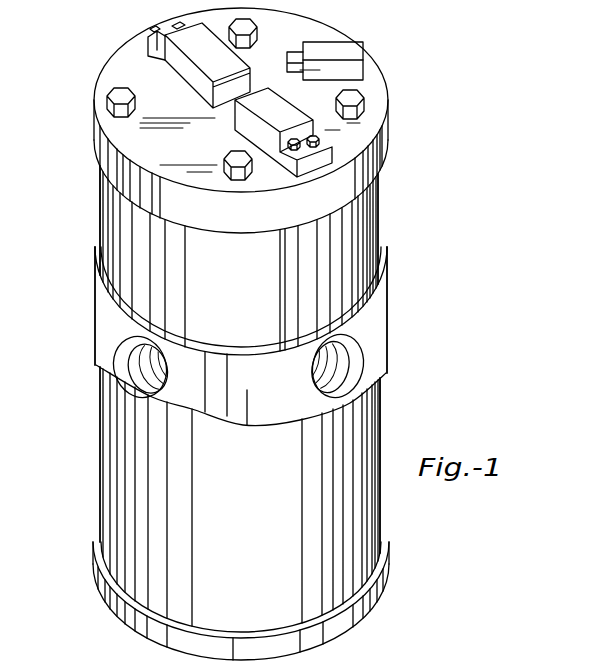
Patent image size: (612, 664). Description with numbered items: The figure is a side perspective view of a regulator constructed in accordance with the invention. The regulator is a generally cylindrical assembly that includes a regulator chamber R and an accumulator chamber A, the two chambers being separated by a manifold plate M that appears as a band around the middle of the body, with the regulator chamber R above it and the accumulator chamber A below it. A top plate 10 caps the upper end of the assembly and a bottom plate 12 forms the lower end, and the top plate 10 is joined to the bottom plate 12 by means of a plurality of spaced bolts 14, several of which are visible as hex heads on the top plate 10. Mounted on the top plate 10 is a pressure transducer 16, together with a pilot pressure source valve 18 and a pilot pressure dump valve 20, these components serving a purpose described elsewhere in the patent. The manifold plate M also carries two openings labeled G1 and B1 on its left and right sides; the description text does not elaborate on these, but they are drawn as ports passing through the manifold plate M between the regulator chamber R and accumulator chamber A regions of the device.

The top plate 10 is at (377, 148).
The bottom plate 12 is at (383, 577).
The bolts 14 is at (115, 99).
The pressure transducer 16 is at (353, 45).
The pilot pressure source valve 18 is at (253, 125).
The pilot pressure dump valve 20 is at (148, 50).
The regulator chamber R is at (378, 220).
The manifold plate M is at (388, 310).
The accumulator chamber A is at (385, 430).
The left port opening G1 is at (128, 366).
The right port opening B1 is at (350, 373).